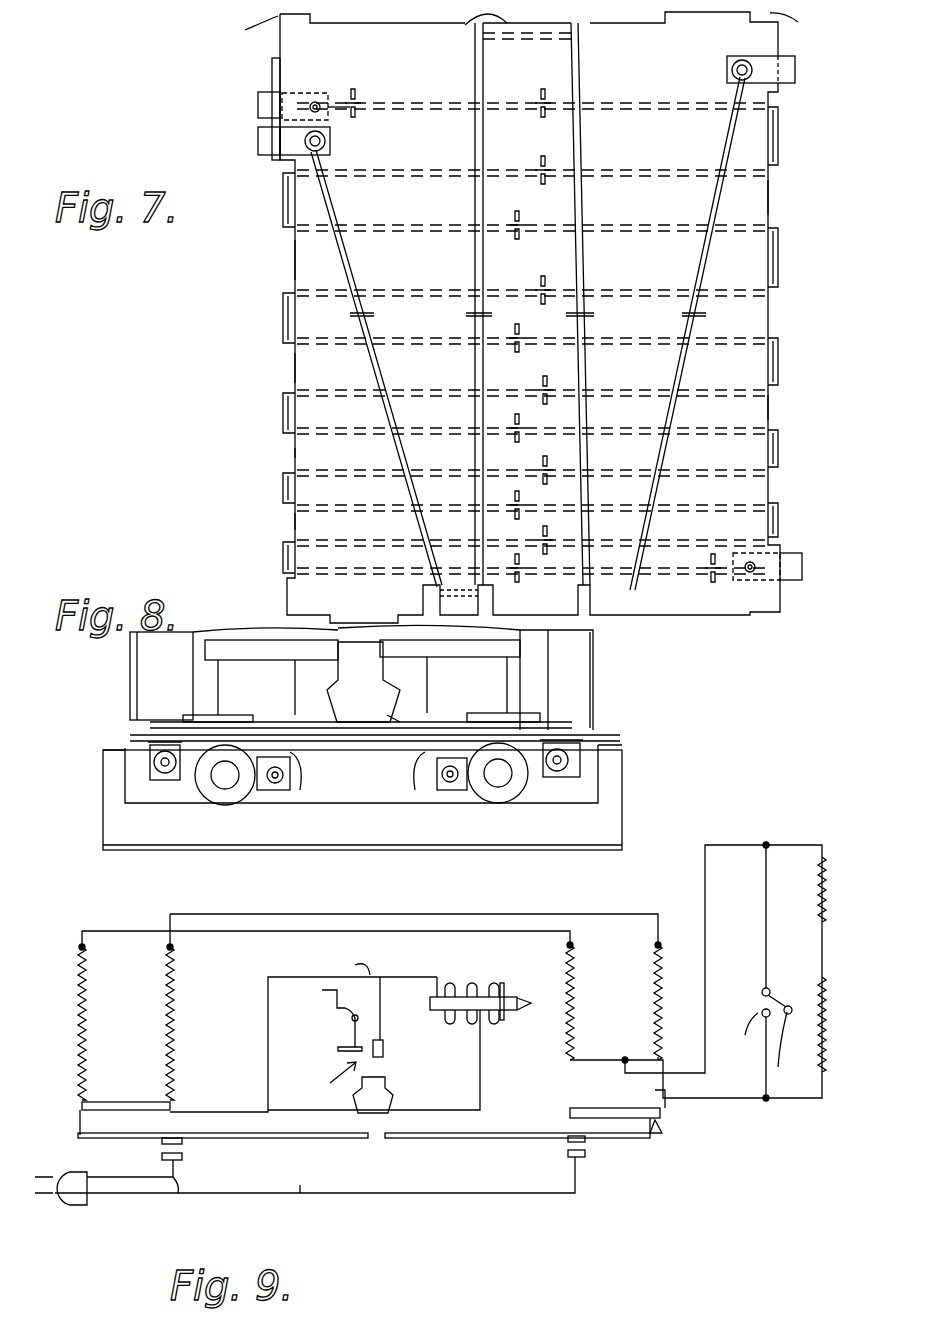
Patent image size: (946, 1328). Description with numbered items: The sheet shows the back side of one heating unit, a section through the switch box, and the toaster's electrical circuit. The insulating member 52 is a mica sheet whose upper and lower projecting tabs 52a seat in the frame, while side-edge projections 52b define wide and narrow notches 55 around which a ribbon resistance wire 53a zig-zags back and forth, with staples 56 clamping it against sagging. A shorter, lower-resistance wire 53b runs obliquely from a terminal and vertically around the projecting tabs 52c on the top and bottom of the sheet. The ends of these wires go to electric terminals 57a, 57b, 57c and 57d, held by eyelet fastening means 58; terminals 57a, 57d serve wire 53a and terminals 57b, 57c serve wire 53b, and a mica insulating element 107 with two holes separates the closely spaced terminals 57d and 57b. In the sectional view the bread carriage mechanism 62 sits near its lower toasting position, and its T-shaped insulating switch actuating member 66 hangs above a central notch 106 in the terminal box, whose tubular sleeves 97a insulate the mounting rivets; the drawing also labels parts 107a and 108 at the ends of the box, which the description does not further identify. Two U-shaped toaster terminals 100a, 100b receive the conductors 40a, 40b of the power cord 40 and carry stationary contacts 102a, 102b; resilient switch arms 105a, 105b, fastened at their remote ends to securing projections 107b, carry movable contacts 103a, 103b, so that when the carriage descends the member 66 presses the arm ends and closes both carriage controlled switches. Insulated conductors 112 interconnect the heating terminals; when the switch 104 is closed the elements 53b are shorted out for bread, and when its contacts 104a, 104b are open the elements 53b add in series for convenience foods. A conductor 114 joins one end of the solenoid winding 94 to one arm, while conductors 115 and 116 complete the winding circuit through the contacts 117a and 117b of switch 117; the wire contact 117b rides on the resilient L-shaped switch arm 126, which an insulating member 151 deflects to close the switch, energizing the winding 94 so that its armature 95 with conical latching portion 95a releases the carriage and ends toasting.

In FIG. 7, the insulating member 52 is at (318, 380).
In FIG. 7, the projecting tabs 52a is at (519, 32).
In FIG. 7, the projections 52b is at (782, 440).
In FIG. 7, the projecting tab 52c is at (628, 612).
In FIG. 9, the resistance wire 53a is at (575, 985).
In FIG. 7, the resistance wire 53b is at (700, 262).
In FIG. 9, the resistance wire 53b is at (826, 1058).
In FIG. 7, the notches 55 is at (293, 515).
In FIG. 7, the staples 56 is at (714, 583).
In FIG. 7, the electric terminal 57a is at (802, 567).
In FIG. 9, the electric terminal 57a is at (668, 1110).
In FIG. 7, the electric terminal 57b is at (258, 141).
In FIG. 9, the electric terminal 57b is at (656, 945).
In FIG. 7, the electric terminal 57c is at (795, 70).
In FIG. 7, the electric terminal 57d is at (258, 104).
In FIG. 7, the eyelet fastening means 58 is at (752, 575).
In FIG. 8, the bread carriage mechanism 62 is at (267, 660).
In FIG. 8, the switch actuating member 66 is at (375, 700).
In FIG. 9, the switch actuating member 66 is at (388, 1103).
In FIG. 9, the solenoid winding 94 is at (462, 1020).
In FIG. 9, the armature 95 is at (492, 985).
In FIG. 9, the latching portion 95a is at (506, 992).
In FIG. 8, the tubular sleeves 97a is at (545, 770).
In FIG. 8, the toaster terminal 100a is at (270, 790).
In FIG. 8, the toaster terminal 100b is at (458, 790).
In FIG. 8, the stationary contact 102a is at (500, 788).
In FIG. 9, the stationary contact 102a is at (568, 1155).
In FIG. 8, the stationary contact 102b is at (225, 790).
In FIG. 9, the stationary contact 102b is at (182, 1158).
In FIG. 8, the movable contact 103a is at (452, 740).
In FIG. 9, the movable contact 103a is at (585, 1142).
In FIG. 8, the movable contact 103b is at (280, 722).
In FIG. 9, the movable contact 103b is at (182, 1142).
In FIG. 9, the switch 104 is at (746, 994).
In FIG. 9, the switch contact 104a is at (758, 1015).
In FIG. 9, the switch contact 104b is at (803, 1052).
In FIG. 8, the resilient switch arm 105a is at (345, 730).
In FIG. 8, the resilient switch arm 105b is at (388, 743).
In FIG. 9, the resilient switch arm 105b is at (405, 1138).
In FIG. 8, the central notch 106 is at (383, 725).
In FIG. 7, the insulating element 107 is at (272, 64).
In FIG. 9, the insulating element 107 is at (597, 1108).
In FIG. 9, the contact 107a is at (658, 1135).
In FIG. 8, the securing projections 107b is at (560, 755).
In FIG. 8, the wheel 108 is at (560, 762).
In FIG. 9, the insulated conductors 112 is at (730, 1098).
In FIG. 9, the conductor 114 is at (480, 1053).
In FIG. 9, the conductor 115 is at (218, 1110).
In FIG. 9, the conductor 116 is at (410, 977).
In FIG. 9, the switch 117 is at (320, 1081).
In FIG. 9, the contact 117a is at (383, 1050).
In FIG. 9, the movable contact 117b is at (338, 1048).
In FIG. 9, the switch arm 126 is at (345, 956).
In FIG. 9, the insulating member 151 is at (322, 993).
In FIG. 9, the power cord 40 is at (95, 1200).
In FIG. 8, the conductor 40a is at (300, 795).
In FIG. 9, the conductor 40a is at (285, 1195).
In FIG. 8, the conductor 40b is at (415, 795).
In FIG. 9, the conductor 40b is at (175, 1195).